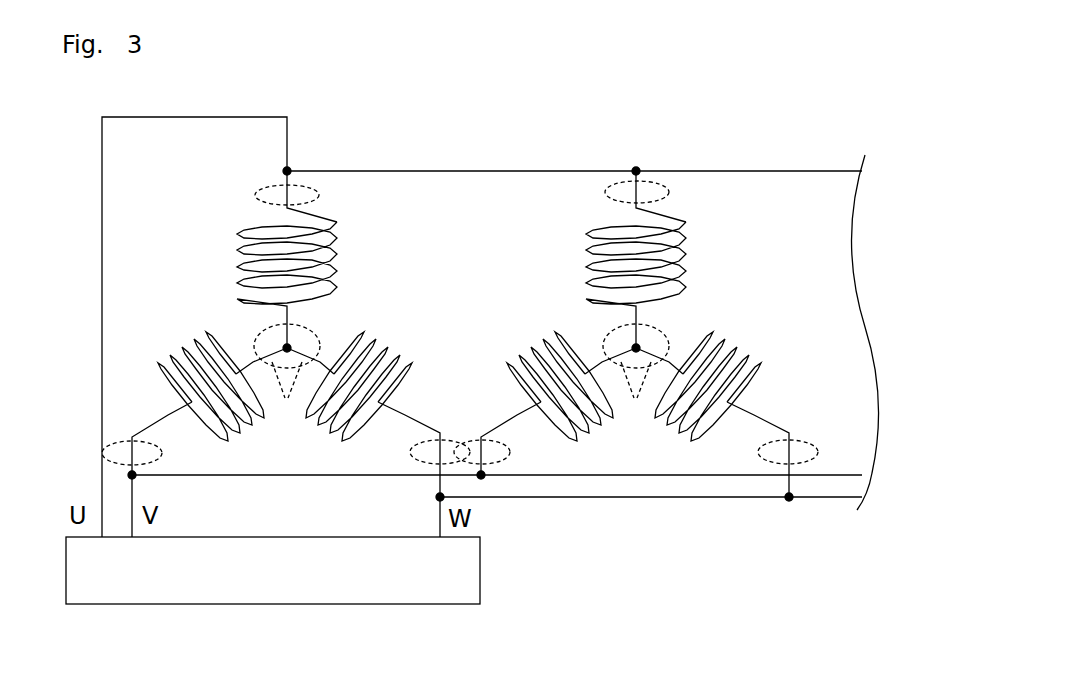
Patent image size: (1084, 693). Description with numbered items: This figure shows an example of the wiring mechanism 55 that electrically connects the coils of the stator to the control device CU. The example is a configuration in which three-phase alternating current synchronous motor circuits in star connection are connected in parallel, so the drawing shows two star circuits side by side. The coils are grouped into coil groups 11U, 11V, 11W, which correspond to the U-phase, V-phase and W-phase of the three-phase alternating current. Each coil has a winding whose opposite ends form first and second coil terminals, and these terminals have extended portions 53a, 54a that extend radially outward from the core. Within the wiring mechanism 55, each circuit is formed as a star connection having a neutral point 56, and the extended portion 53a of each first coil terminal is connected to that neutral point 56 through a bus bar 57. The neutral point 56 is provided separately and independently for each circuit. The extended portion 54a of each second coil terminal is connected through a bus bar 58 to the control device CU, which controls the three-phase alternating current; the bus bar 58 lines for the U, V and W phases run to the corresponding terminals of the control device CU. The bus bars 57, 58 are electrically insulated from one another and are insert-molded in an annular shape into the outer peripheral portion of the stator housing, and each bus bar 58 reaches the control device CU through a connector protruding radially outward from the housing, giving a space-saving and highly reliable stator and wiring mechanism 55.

The coil group 11U is at (572, 253).
The coil group 11V is at (166, 342).
The coil group 11W is at (655, 435).
The extended portion 53a is at (253, 328).
The extended portion 54a is at (257, 187).
The wiring mechanism 55 is at (715, 146).
The neutral point 56 is at (296, 343).
The bus bar 57 is at (459, 396).
The bus bar 58 is at (543, 171).
The control device CU is at (445, 573).